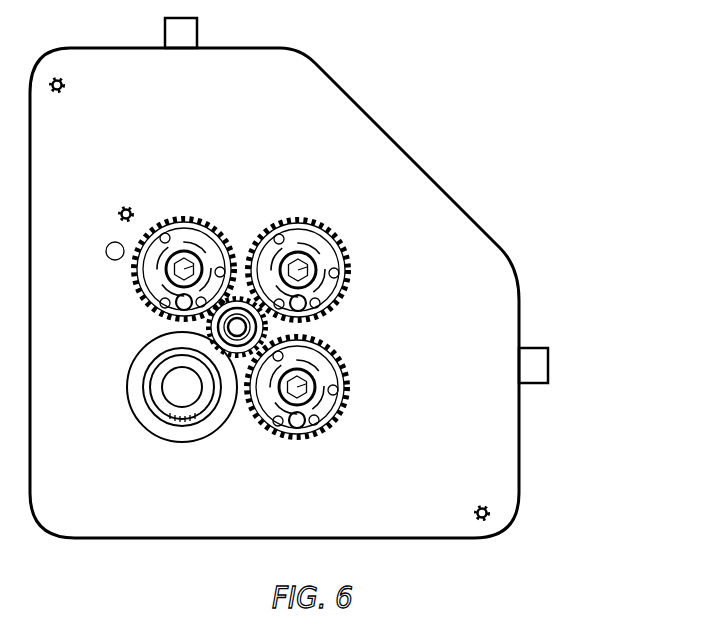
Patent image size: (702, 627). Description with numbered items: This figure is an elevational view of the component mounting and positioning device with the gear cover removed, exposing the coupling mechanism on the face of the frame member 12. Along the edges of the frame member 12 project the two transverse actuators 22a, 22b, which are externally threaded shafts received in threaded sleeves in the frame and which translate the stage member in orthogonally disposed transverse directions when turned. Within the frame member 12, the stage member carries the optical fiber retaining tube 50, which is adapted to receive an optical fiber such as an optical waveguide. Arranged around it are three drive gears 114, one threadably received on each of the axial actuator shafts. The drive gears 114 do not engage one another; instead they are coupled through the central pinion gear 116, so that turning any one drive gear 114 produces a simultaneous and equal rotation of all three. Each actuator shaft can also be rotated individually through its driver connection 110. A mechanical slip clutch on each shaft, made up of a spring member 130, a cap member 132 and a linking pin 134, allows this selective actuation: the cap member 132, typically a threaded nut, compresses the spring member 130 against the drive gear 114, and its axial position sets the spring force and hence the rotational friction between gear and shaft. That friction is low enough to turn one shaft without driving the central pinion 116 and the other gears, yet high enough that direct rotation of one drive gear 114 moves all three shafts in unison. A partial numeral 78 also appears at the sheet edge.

The frame member 12 is at (332, 118).
The transverse actuator 22a is at (165, 30).
The transverse actuator 22b is at (540, 385).
The optical fiber retaining tube 50 is at (137, 403).
The driver connection 110 is at (180, 268).
The drive gear 114 is at (182, 230).
The central pinion gear 116 is at (140, 360).
The spring member 130 is at (150, 253).
The cap member 132 is at (163, 278).
The linking pin 134 is at (225, 327).
The element 78 is at (71, 623).